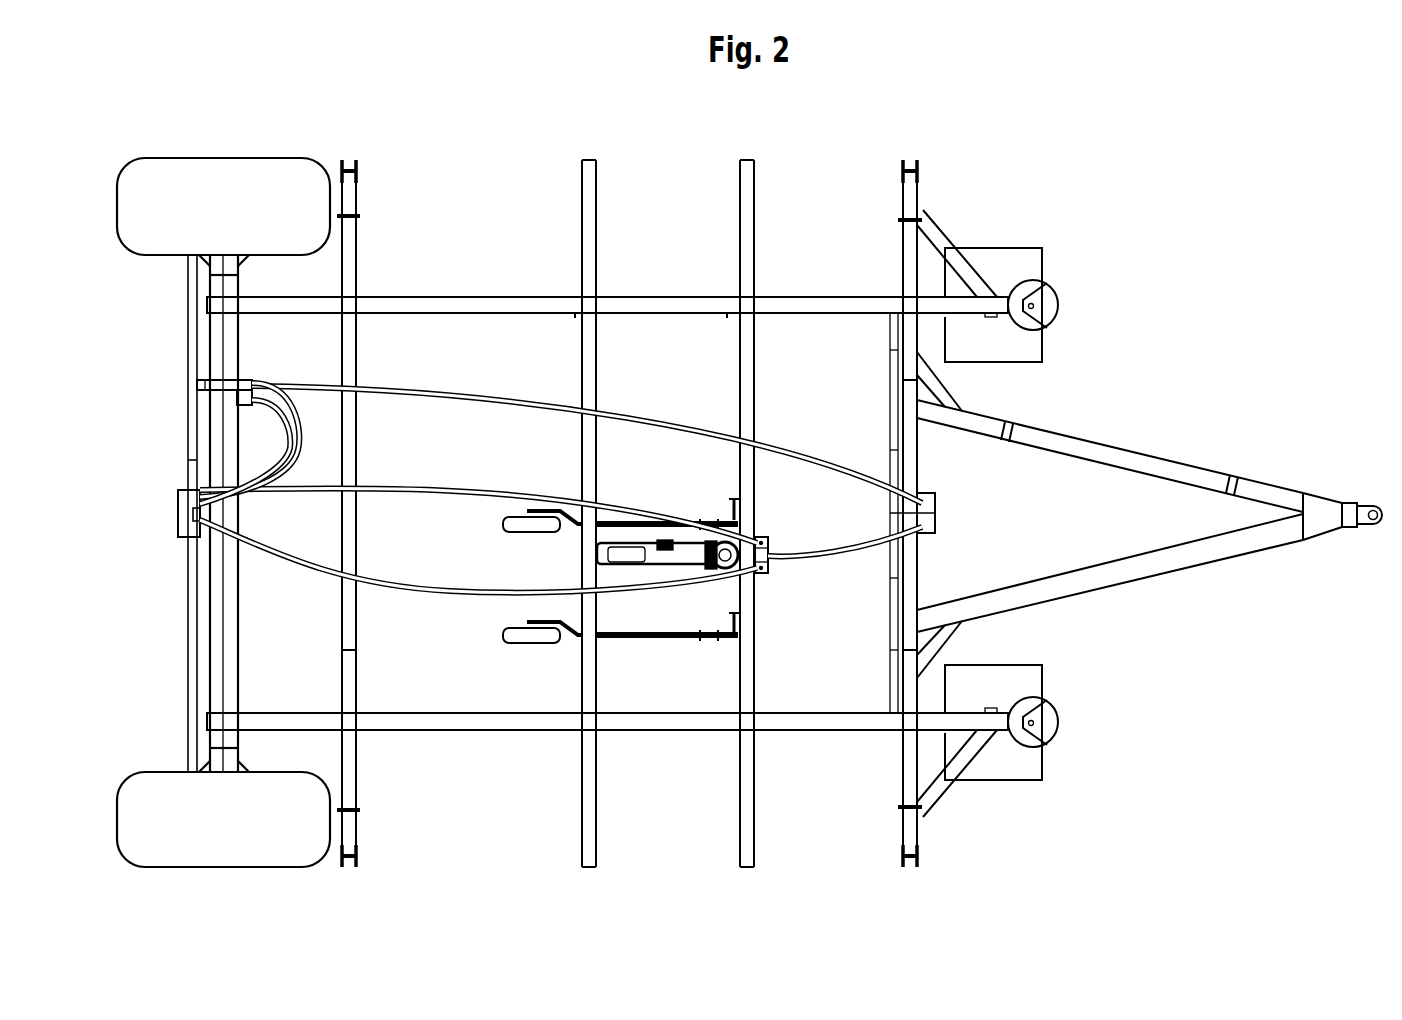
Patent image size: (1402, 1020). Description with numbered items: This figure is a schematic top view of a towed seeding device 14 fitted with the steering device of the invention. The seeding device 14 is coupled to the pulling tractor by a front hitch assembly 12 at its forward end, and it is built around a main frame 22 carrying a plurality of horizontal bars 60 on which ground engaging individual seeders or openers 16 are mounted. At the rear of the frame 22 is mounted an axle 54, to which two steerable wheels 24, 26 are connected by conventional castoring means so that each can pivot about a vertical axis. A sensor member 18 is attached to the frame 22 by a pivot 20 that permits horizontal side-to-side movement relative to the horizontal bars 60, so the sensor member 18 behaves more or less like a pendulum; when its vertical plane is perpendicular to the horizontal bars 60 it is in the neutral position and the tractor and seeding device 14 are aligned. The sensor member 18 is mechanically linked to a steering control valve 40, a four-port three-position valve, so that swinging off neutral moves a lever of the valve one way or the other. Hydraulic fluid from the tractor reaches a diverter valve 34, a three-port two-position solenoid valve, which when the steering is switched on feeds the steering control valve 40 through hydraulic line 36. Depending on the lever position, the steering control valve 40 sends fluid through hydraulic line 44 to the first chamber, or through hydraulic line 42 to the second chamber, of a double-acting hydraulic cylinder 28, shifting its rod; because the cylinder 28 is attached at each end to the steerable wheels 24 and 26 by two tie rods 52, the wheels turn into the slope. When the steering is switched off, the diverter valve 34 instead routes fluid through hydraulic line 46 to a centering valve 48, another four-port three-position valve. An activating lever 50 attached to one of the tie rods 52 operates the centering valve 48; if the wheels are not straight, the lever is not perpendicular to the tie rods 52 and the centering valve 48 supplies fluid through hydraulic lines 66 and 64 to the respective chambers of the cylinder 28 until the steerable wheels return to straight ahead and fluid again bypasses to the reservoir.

The front hitch assembly 12 is at (1137, 452).
The seeding device 14 is at (988, 192).
The openers 16 is at (641, 512).
The sensor member 18 is at (668, 557).
The pivot 20 is at (714, 567).
The main frame 22 is at (358, 196).
The steerable wheel 24 is at (222, 178).
The steerable wheel 26 is at (225, 848).
The double-acting hydraulic cylinder 28 is at (178, 514).
The diverter valve 34 is at (937, 513).
The hydraulic line 36 is at (848, 562).
The steering control valve 40 is at (770, 543).
The hydraulic line 42 is at (436, 590).
The hydraulic line 44 is at (462, 499).
The hydraulic line 46 is at (472, 404).
The centering valve 48 is at (245, 404).
The activating lever 50 is at (197, 383).
The tie rods 52 is at (188, 430).
The axle 54 is at (223, 665).
The horizontal bars 60 is at (753, 368).
The hydraulic line 64 is at (259, 380).
The hydraulic line 66 is at (267, 505).